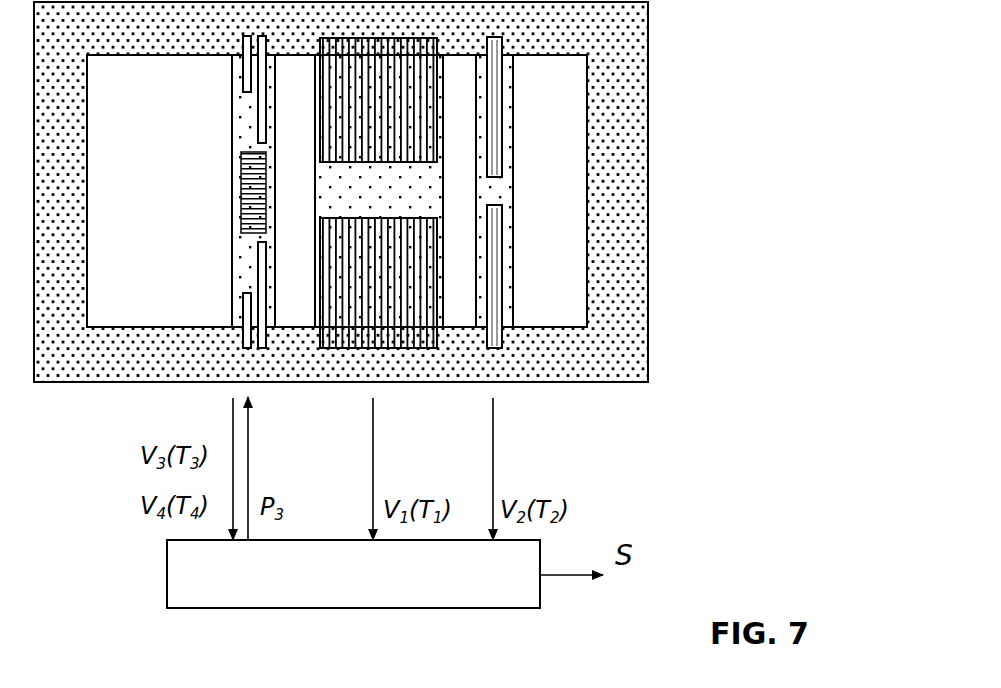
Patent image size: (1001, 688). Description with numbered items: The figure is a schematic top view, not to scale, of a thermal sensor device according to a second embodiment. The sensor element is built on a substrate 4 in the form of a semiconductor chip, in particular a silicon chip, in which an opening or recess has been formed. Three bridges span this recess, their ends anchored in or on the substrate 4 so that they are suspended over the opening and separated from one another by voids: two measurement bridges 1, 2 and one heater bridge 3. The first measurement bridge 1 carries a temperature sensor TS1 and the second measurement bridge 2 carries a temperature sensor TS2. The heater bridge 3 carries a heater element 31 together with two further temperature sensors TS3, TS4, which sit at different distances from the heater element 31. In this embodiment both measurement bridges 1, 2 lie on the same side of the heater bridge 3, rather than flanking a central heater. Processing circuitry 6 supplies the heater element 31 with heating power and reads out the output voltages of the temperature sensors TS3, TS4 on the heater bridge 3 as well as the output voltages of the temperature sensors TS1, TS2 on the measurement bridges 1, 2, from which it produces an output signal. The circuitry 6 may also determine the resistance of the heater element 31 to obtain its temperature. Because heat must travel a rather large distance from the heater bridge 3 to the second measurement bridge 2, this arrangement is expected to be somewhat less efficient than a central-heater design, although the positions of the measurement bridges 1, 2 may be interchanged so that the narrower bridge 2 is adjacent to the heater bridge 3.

The measurement bridge 1 is at (430, 190).
The measurement bridge 2 is at (515, 252).
The heater bridge 3 is at (236, 252).
The substrate 4 is at (640, 58).
The processing circuitry 6 is at (364, 594).
The heater element 31 is at (241, 205).
The temperature sensor TS1 is at (418, 158).
The temperature sensor TS2 is at (502, 163).
The temperature sensor TS3 is at (258, 107).
The temperature sensor TS4 is at (243, 63).